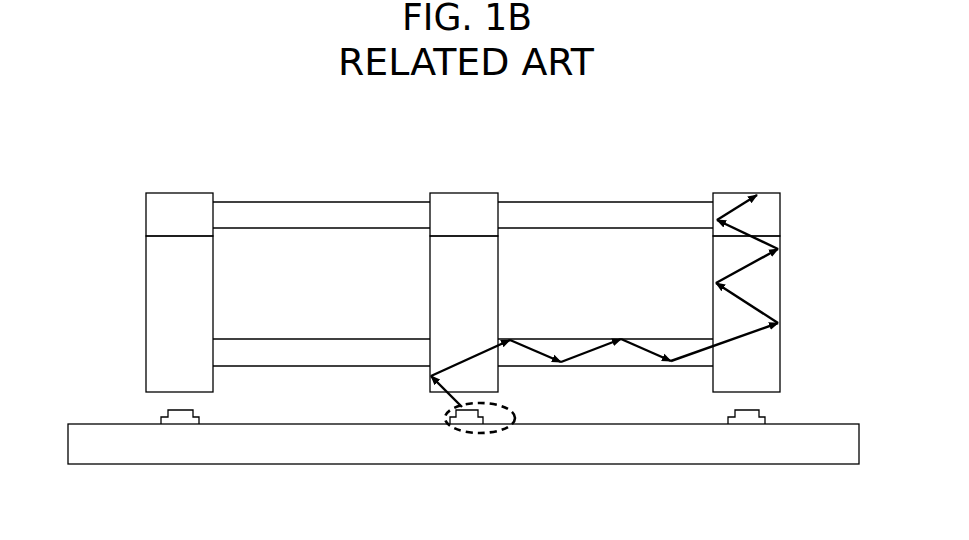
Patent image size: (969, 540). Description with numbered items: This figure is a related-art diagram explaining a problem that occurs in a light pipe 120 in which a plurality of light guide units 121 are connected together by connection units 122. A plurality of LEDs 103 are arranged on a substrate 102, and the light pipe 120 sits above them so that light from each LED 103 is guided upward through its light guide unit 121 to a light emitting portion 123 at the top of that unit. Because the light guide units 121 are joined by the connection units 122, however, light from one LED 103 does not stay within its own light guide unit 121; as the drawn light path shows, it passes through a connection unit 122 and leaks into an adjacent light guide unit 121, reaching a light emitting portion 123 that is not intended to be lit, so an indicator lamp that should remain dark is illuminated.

The light pipe 120 is at (527, 139).
The light guide unit 121 is at (162, 312).
The connection unit 122 is at (286, 345).
The light emitting portion 123 is at (179, 214).
The substrate 102 is at (796, 424).
The LED 103 is at (182, 418).